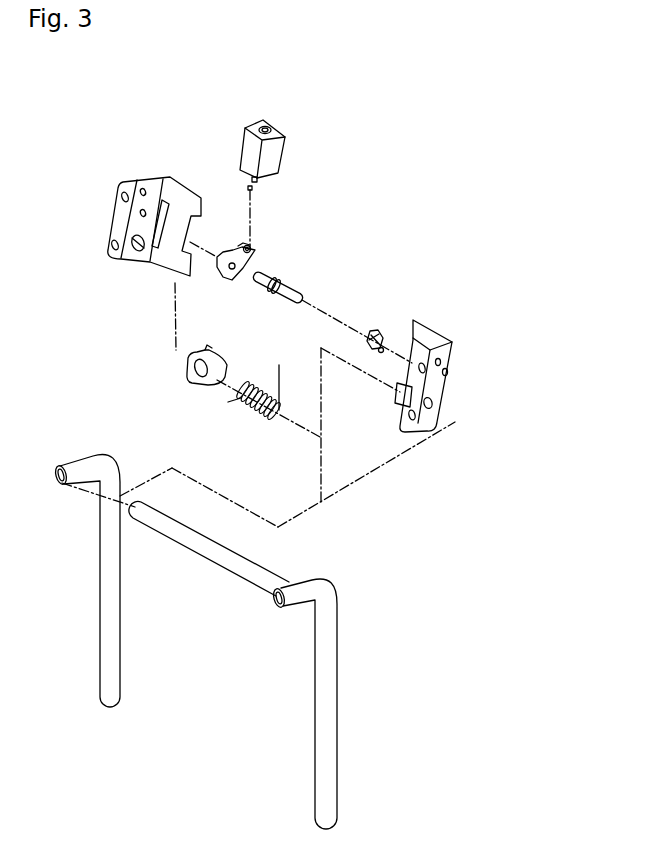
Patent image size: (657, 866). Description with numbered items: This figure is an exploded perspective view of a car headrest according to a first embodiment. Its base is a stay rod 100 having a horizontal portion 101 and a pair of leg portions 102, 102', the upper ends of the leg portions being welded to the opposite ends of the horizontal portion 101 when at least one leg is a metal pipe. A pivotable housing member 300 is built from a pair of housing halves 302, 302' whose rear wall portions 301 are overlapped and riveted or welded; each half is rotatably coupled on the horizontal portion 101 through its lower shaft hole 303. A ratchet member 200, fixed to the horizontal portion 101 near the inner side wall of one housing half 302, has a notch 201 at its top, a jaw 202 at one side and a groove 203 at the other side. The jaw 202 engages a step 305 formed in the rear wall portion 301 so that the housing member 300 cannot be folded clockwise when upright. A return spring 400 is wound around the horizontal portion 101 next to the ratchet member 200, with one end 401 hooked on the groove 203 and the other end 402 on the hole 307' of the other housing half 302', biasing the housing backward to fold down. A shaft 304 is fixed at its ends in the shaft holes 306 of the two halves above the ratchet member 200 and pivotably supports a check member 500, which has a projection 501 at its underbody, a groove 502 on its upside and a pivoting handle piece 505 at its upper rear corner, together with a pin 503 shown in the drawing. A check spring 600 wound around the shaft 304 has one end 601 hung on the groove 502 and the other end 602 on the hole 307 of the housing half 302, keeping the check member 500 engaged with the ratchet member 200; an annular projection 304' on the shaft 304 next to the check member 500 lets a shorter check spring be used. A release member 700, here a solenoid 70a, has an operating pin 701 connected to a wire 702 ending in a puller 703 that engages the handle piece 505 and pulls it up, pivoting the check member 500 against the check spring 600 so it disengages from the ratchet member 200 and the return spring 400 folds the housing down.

The stay rod 100 is at (225, 641).
The horizontal portion 101 is at (238, 572).
The leg portion 102 is at (71, 580).
The leg portion 102' is at (350, 704).
The ratchet member 200 is at (202, 385).
The notch 201 is at (209, 358).
The jaw 202 is at (222, 364).
The groove 203 is at (189, 365).
The pivotable housing member 300 is at (273, 268).
The rear wall portion 301 is at (183, 184).
The housing half 302 is at (135, 160).
The housing half 302' is at (486, 359).
The lower shaft hole 303 is at (135, 253).
The shaft 304 is at (318, 285).
The annular projection 304' is at (310, 273).
The step 305 is at (148, 256).
The shaft hole 306 is at (125, 208).
The hole 307 is at (112, 163).
The hole 307' is at (479, 341).
The return spring 400 is at (267, 395).
The one end of return spring 401 is at (230, 402).
The other end of return spring 402 is at (282, 367).
The check member 500 is at (273, 263).
The projection 501 is at (228, 276).
The groove 502 is at (240, 248).
The pin 503 is at (303, 292).
The pivoting handle piece 505 is at (255, 249).
The check spring 600 is at (379, 330).
The one end of check spring 601 is at (374, 333).
The other end of check spring 602 is at (368, 350).
The release member 700 is at (277, 149).
The operating pin 701 is at (268, 124).
The solenoid 70a is at (290, 145).
The wire 702 is at (258, 182).
The puller 703 is at (249, 186).